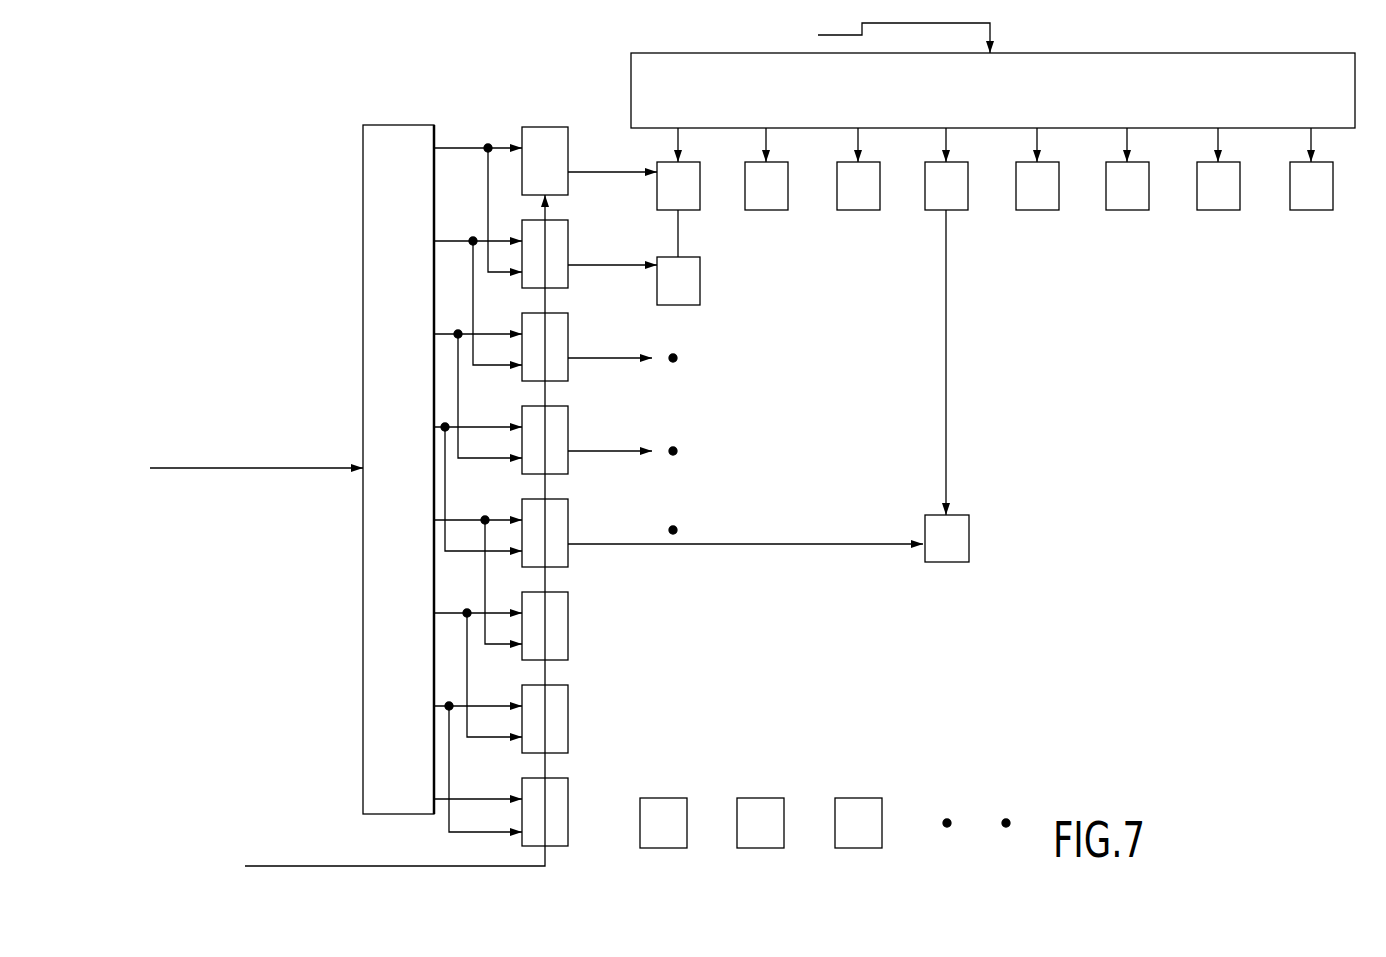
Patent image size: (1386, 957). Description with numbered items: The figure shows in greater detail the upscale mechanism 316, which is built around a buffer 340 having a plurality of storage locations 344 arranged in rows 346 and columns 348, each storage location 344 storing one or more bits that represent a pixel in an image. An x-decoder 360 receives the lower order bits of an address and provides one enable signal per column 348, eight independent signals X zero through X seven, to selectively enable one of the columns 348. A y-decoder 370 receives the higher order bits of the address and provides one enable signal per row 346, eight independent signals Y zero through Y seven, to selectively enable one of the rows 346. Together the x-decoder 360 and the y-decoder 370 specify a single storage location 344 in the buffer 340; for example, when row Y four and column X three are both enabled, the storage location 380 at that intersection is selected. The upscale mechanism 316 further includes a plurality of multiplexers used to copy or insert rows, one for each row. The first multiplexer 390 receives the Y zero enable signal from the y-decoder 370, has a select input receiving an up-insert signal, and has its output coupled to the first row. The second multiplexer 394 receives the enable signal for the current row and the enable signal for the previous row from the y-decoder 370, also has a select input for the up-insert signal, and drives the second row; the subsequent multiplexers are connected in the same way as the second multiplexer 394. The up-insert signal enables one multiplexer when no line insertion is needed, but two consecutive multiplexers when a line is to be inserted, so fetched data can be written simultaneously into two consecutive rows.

The upscale mechanism 316 is at (310, 115).
The buffer 340 is at (912, 265).
The storage location 344 is at (698, 286).
The row 346 is at (660, 164).
The column 348 is at (767, 199).
The x-decoder 360 is at (638, 62).
The y-decoder 370 is at (362, 307).
The storage location 380 is at (964, 547).
The first multiplexer 390 is at (538, 131).
The second multiplexer 394 is at (568, 234).